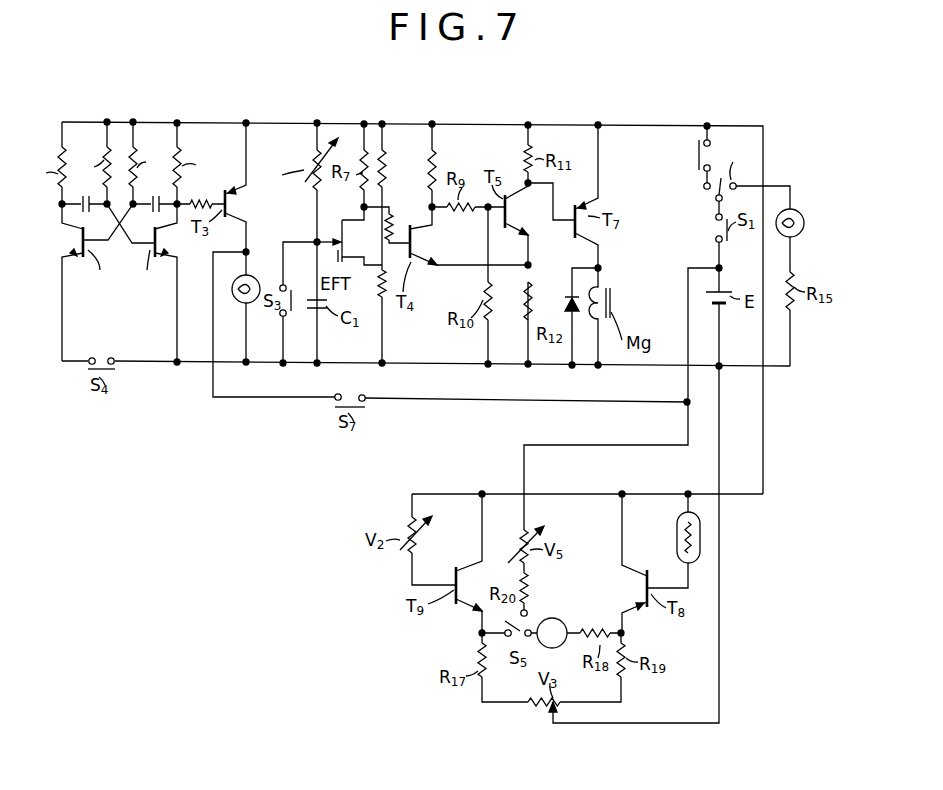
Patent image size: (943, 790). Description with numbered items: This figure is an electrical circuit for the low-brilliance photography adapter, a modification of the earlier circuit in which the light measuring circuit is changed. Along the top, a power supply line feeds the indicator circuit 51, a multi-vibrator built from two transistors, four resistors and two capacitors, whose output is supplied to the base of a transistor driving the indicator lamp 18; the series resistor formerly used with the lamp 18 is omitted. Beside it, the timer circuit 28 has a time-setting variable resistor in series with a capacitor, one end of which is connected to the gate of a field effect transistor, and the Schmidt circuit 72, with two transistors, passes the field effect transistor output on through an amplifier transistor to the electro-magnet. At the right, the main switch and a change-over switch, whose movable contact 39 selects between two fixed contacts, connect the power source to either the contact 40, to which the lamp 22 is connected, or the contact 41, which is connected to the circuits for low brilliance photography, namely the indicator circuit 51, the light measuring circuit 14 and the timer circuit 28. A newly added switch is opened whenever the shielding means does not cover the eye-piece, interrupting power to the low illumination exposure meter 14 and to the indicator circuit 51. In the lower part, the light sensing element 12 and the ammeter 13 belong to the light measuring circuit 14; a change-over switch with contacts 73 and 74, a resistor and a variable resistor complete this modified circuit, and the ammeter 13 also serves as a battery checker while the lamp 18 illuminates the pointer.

The Schmidt circuit 72 is at (459, 125).
The indicator circuit 51 is at (131, 118).
The timer circuit 28 is at (315, 137).
The indicator lamp 18 is at (254, 273).
The contact 41 is at (712, 160).
The switch S2 movable contact 39 is at (713, 191).
The contact 40 is at (736, 184).
The lamp 22 is at (805, 229).
The light measuring circuit 14 is at (765, 460).
The contact 74 is at (530, 612).
The contact 73 is at (502, 637).
The ammeter 13 is at (566, 622).
The light sensing element 12 is at (702, 536).